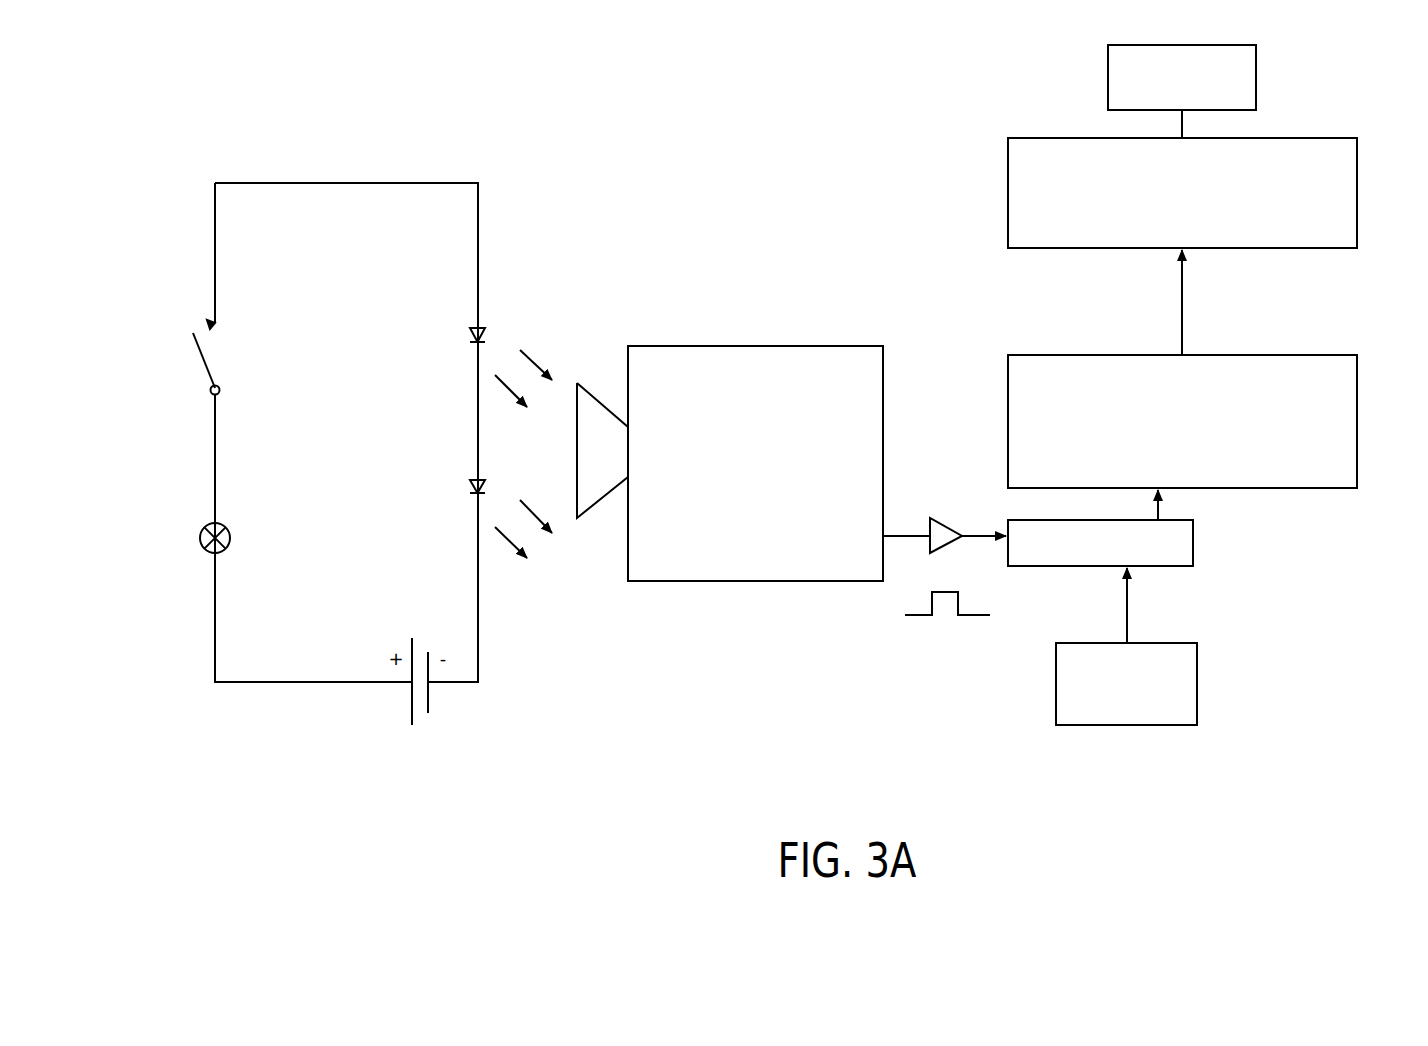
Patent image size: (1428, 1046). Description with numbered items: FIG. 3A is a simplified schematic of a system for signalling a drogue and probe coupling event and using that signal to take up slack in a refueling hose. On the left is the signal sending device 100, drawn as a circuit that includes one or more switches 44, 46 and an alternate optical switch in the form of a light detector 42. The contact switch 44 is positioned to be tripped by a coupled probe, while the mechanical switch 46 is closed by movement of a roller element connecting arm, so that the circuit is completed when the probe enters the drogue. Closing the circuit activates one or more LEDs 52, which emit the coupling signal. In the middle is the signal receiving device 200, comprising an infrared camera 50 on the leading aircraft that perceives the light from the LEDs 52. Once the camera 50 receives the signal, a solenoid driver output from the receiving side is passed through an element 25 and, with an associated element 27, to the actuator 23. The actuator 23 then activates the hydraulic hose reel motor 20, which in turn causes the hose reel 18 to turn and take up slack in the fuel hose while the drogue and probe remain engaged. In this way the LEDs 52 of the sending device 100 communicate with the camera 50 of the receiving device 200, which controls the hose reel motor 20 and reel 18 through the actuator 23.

The signal sending device 100 is at (423, 130).
The signal receiving device 200 is at (843, 198).
The contact switch 44 is at (205, 362).
The mechanical switch 46 is at (181, 403).
The light detector 42 is at (200, 548).
The LEDs 52 is at (485, 336).
The infrared camera 50 is at (883, 405).
The hose reel 18 is at (1256, 85).
The hose reel motor 20 is at (1357, 198).
The actuator 23 is at (1357, 418).
The solenoid 25 is at (1193, 545).
The power source 27 is at (1197, 683).